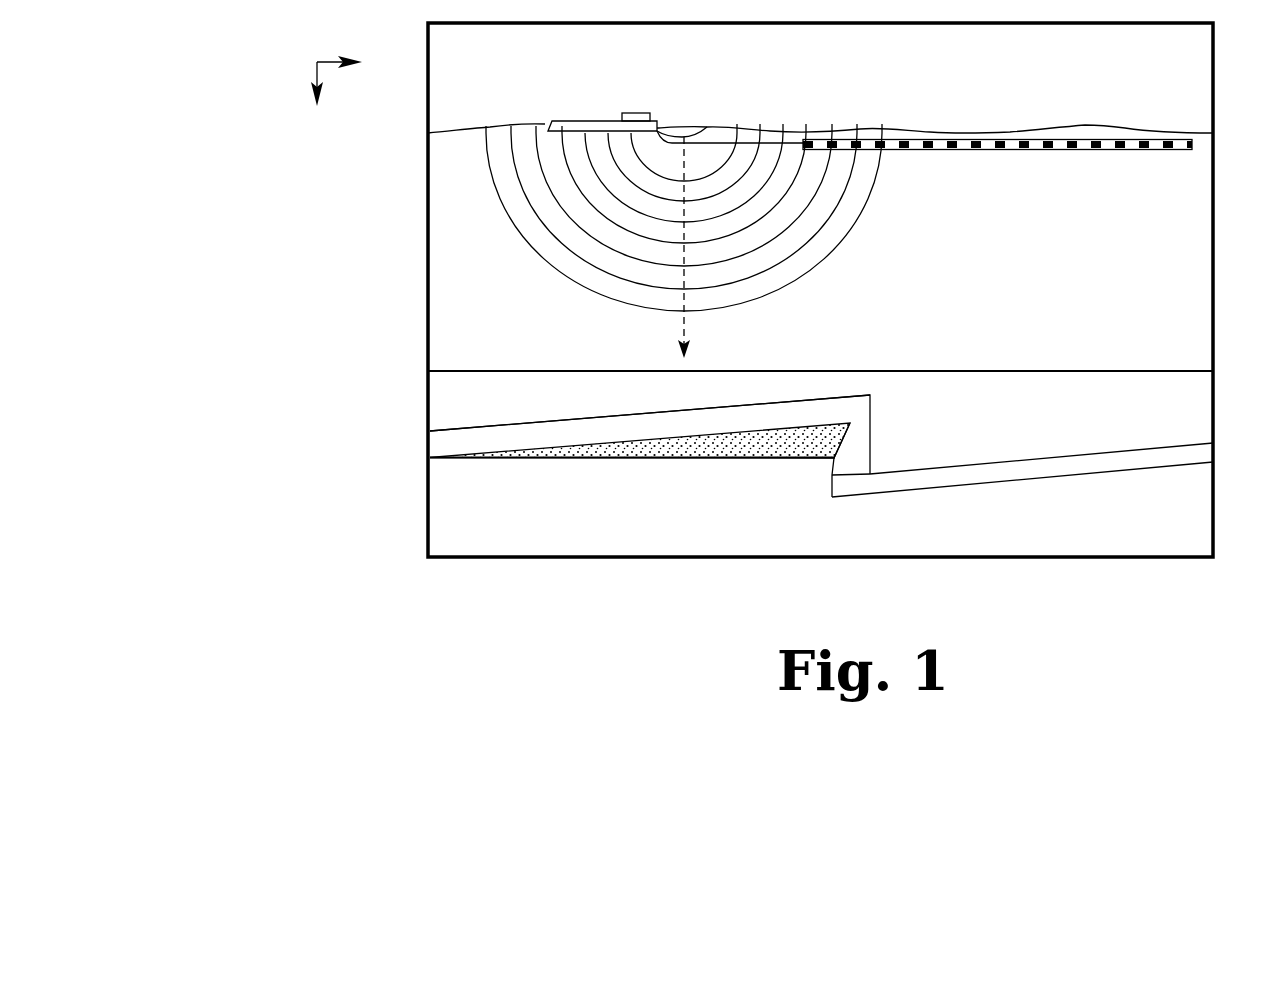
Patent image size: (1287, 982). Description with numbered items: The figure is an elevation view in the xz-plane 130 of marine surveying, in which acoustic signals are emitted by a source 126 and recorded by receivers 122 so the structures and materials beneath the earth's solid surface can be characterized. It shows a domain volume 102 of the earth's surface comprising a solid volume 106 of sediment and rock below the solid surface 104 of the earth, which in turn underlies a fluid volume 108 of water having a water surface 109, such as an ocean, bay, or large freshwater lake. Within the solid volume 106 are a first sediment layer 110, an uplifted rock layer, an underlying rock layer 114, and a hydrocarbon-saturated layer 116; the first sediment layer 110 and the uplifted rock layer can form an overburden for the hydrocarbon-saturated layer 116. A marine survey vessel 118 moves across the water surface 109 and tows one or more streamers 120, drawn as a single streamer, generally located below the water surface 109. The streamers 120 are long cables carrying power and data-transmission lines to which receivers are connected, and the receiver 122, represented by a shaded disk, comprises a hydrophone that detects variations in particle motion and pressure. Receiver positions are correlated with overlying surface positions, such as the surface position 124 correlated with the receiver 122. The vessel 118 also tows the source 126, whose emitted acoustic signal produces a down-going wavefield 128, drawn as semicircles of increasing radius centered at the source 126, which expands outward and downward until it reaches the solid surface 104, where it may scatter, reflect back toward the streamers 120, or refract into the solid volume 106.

The domain volume 102 is at (322, 189).
The solid surface 104 is at (483, 370).
The solid volume 106 is at (448, 388).
The fluid volume 108 is at (443, 272).
The water surface 109 is at (953, 132).
The first sediment layer 110 is at (1078, 431).
The underlying rock layer 114 is at (552, 547).
The hydrocarbon-saturated layer 116 is at (648, 458).
The marine survey vessel 118 is at (594, 121).
The streamer 120 is at (1001, 167).
The receiver 122 is at (1118, 152).
The surface position 124 is at (1117, 131).
The source 126 is at (682, 136).
The down-going wavefield 128 is at (847, 235).
The xz-plane 130 is at (317, 62).